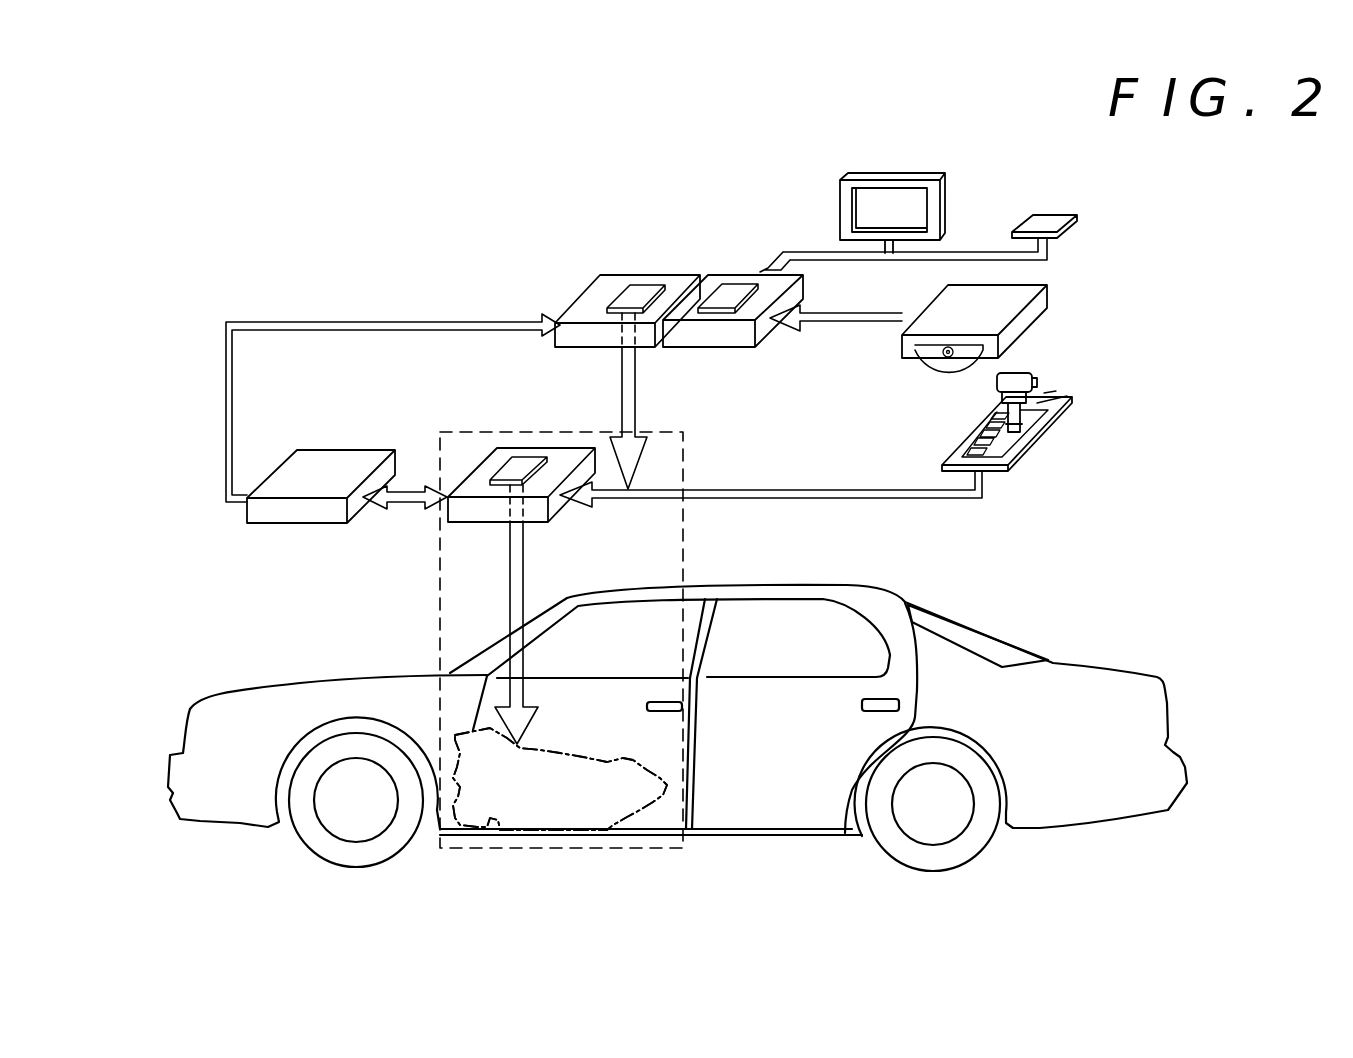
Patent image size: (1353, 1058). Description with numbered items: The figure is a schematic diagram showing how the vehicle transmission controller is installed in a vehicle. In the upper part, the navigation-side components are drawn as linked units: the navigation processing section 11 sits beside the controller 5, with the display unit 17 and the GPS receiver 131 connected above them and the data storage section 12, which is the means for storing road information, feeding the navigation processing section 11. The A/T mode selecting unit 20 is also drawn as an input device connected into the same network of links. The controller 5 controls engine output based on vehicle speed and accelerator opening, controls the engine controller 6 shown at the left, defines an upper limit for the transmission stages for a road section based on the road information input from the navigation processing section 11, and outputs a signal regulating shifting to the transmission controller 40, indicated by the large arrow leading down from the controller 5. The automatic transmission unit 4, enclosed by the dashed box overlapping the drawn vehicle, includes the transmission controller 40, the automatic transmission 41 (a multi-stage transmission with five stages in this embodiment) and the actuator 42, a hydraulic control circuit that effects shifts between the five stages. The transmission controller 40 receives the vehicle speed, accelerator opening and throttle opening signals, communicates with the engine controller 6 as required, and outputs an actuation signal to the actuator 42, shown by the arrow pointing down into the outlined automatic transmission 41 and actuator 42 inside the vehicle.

The automatic transmission unit 4 is at (683, 545).
The controller 5 is at (591, 288).
The engine controller 6 is at (290, 462).
The navigation processing section 11 is at (729, 276).
The data storage section 12 is at (1047, 322).
The display unit 17 is at (903, 178).
The A/T mode selecting unit 20 is at (1040, 438).
The transmission controller 40 is at (560, 505).
The automatic transmission 41 is at (487, 832).
The actuator 42 is at (474, 882).
The GPS receiver 131 is at (1080, 228).